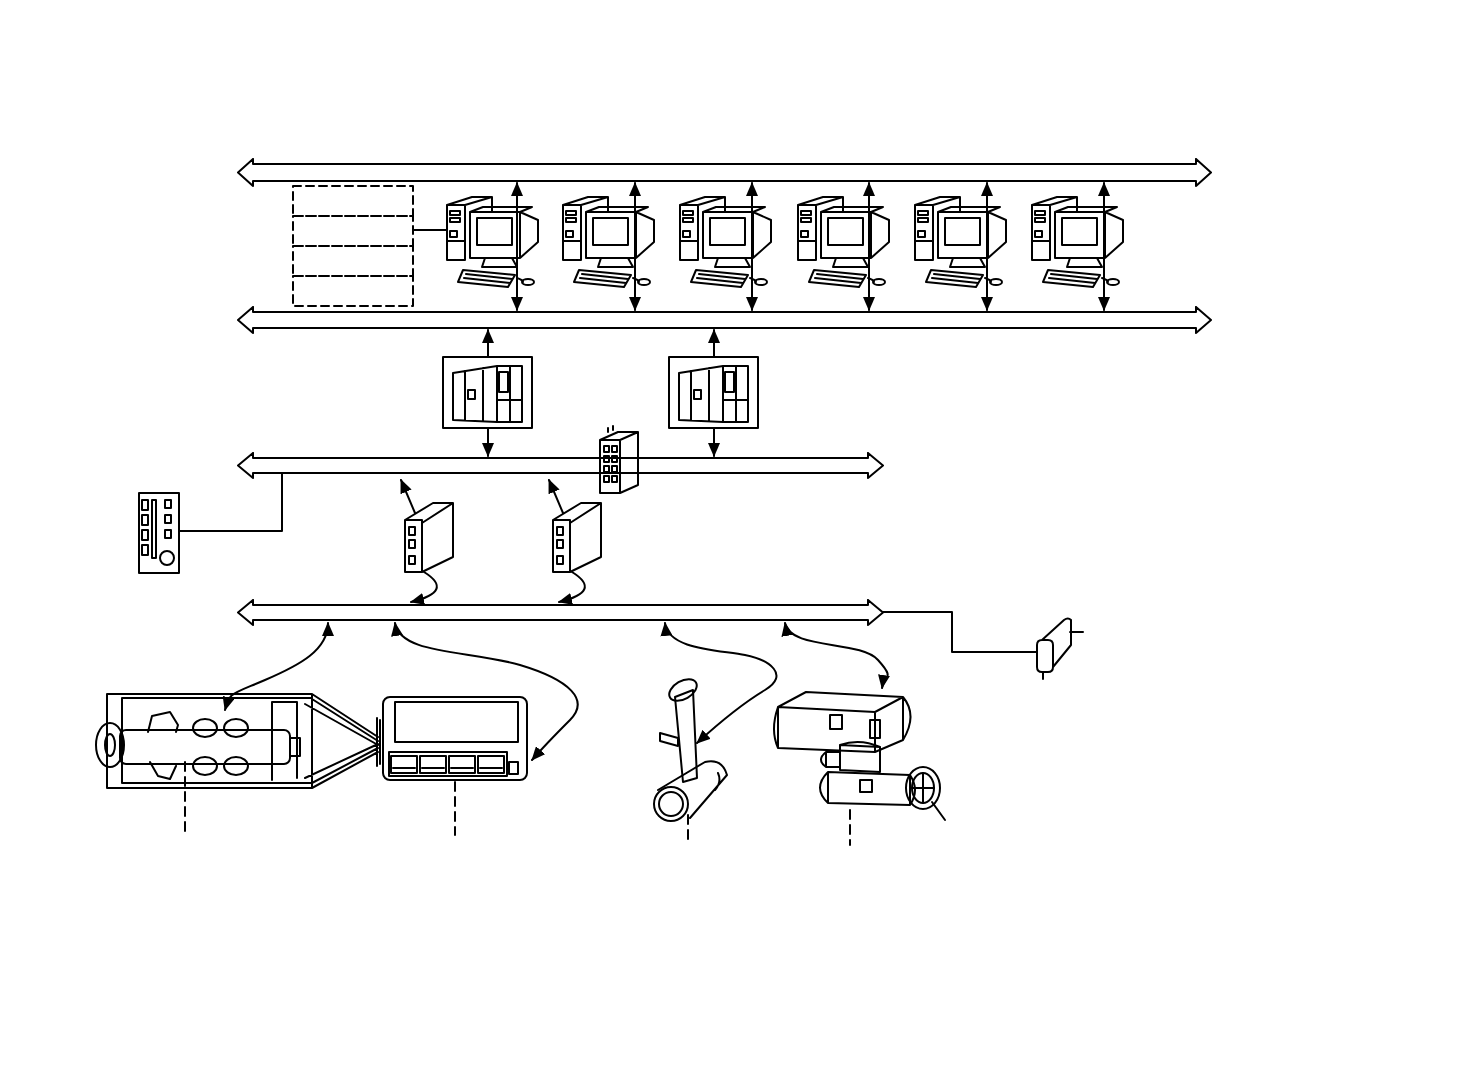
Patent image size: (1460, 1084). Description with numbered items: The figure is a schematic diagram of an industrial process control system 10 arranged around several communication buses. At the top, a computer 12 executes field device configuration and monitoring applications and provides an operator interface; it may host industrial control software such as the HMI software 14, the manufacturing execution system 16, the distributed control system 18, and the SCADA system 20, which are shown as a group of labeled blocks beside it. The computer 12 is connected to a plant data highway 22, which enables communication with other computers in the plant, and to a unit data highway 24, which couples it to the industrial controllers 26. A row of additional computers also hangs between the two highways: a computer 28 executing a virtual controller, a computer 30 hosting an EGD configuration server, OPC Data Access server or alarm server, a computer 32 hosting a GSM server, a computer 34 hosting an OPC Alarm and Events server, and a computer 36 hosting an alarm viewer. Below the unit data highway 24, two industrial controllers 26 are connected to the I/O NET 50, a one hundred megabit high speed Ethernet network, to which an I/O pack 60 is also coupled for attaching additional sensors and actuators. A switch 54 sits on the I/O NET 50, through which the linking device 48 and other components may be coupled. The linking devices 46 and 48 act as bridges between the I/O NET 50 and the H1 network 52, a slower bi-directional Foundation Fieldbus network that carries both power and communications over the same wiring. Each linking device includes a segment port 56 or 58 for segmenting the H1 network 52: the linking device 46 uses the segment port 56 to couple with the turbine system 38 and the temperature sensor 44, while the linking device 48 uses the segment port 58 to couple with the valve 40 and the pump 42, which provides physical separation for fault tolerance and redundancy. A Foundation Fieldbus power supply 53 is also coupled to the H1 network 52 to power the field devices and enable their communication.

The industrial process control system 10 is at (1356, 166).
The computer 12 is at (462, 203).
The human-machine interface (HMI) software 14 is at (293, 199).
The manufacturing execution system (MES) 16 is at (293, 229).
The distributed control system (DCS) 18 is at (293, 259).
The supervisor control and data acquisition (SCADA) system 20 is at (293, 289).
The plant data highway 22 is at (1205, 165).
The unit data highway 24 is at (1205, 312).
The industrial controller 26 is at (532, 394).
The computer 28 is at (578, 203).
The computer 30 is at (695, 203).
The computer 32 is at (813, 203).
The computer 34 is at (930, 203).
The computer 36 is at (1047, 203).
The turbine system 38 is at (266, 797).
The valve 40 is at (702, 806).
The pump 42 is at (941, 800).
The temperature sensor 44 is at (487, 782).
The linking device 46 is at (449, 536).
The linking device 48 is at (597, 536).
The I/O NET 50 is at (883, 470).
The H1 network 52 is at (883, 605).
The Foundation Fieldbus power supply 53 is at (1050, 622).
The switch 54 is at (630, 490).
The segment port 56 is at (400, 573).
The segment port 58 is at (548, 573).
The I/O pack 60 is at (157, 493).